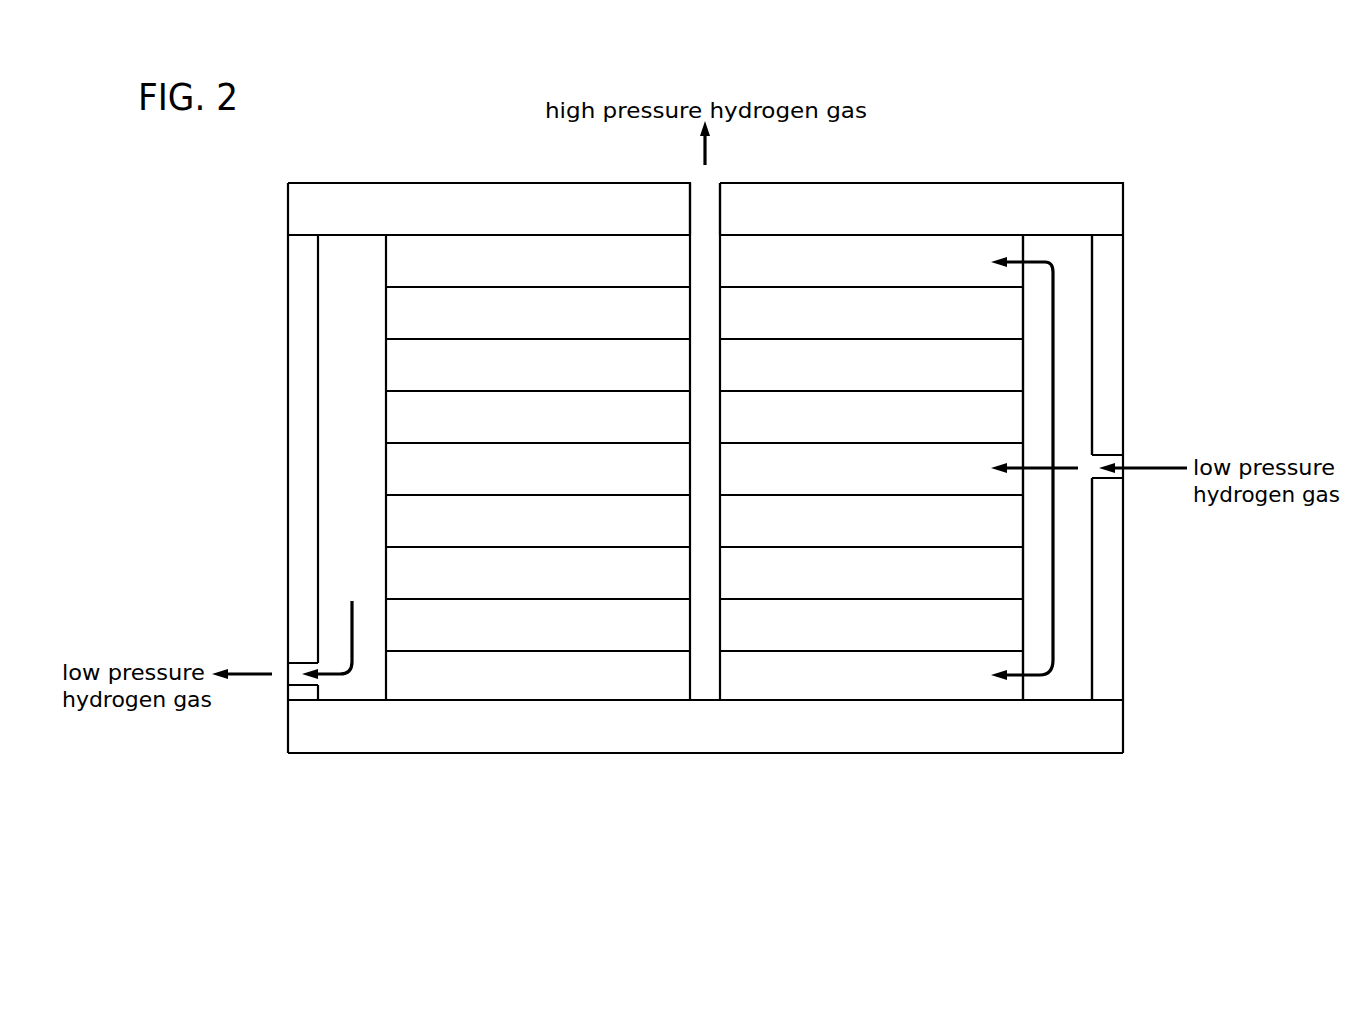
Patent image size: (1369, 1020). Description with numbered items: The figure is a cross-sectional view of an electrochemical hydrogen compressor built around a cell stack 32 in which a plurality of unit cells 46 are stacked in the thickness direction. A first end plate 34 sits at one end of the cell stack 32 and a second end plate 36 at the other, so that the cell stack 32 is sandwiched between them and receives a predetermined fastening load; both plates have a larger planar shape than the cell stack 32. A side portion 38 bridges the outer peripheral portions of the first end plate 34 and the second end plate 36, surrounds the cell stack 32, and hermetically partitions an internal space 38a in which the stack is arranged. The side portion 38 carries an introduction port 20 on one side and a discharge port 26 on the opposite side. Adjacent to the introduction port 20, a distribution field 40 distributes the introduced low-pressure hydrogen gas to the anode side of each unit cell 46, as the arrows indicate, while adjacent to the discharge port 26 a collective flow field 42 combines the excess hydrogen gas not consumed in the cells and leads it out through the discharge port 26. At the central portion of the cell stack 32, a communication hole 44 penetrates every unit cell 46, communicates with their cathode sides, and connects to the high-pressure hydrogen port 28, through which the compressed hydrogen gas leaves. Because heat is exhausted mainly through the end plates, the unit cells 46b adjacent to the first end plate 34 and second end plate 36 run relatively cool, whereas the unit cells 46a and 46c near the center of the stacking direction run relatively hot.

The introduction port 20 is at (1105, 464).
The discharge port 26 is at (295, 668).
The high-pressure hydrogen port 28 is at (720, 200).
The cell stack 32 is at (711, 463).
The first end plate 34 is at (905, 200).
The second end plate 36 is at (838, 730).
The side portion 38 is at (1104, 467).
The internal space 38a is at (1085, 633).
The distribution field 40 is at (1085, 577).
The collective flow field 42 is at (311, 467).
The communication hole 44 is at (718, 676).
The unit cell 46 is at (600, 533).
The unit cell 46a is at (406, 467).
The unit cell 46b is at (409, 308).
The unit cell 46c is at (408, 412).